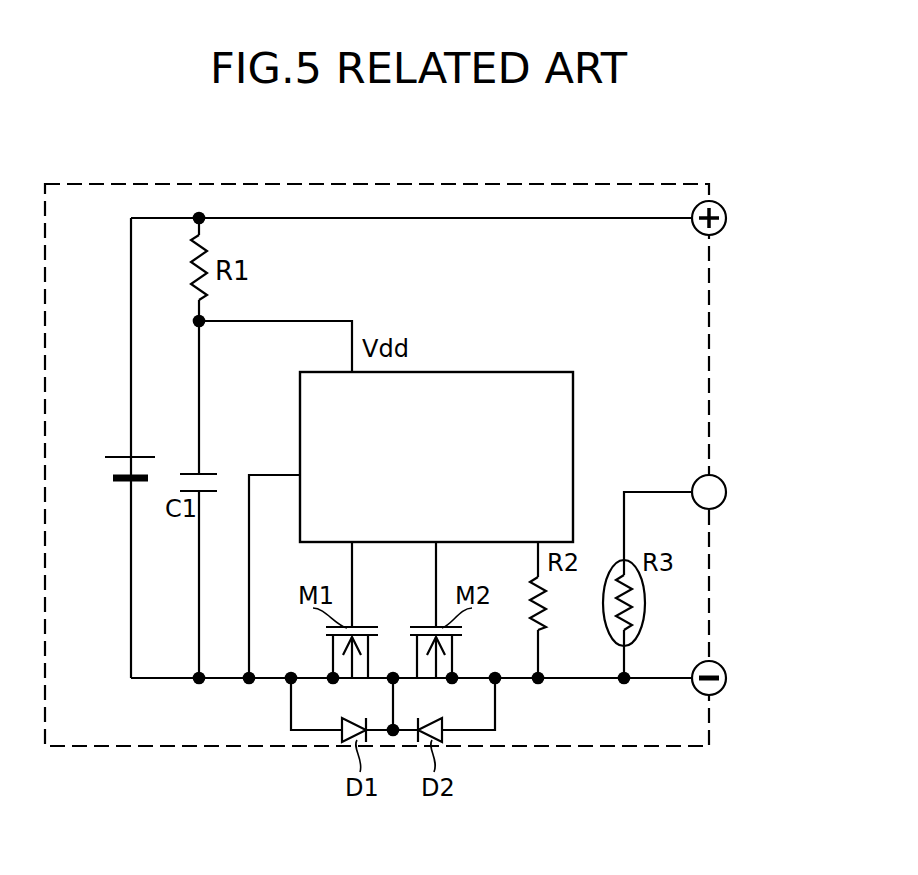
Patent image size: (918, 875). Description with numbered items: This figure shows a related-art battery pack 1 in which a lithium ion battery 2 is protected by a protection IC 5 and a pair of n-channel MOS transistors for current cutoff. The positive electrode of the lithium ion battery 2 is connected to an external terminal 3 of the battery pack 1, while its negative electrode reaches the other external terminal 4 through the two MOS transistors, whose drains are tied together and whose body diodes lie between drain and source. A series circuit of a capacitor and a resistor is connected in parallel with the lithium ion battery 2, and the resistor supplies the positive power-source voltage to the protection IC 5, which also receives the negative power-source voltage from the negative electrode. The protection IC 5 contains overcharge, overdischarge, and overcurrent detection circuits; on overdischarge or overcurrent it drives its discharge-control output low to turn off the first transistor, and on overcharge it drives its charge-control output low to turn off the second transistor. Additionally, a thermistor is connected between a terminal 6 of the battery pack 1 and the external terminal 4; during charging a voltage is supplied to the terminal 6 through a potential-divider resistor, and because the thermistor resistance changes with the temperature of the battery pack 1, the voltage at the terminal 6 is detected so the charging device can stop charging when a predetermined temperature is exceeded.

The battery pack 1 is at (522, 183).
The lithium ion battery 2 is at (112, 467).
The external terminal 3 is at (727, 218).
The external terminal 4 is at (727, 678).
The protection IC 5 is at (540, 372).
The terminal 6 is at (727, 492).